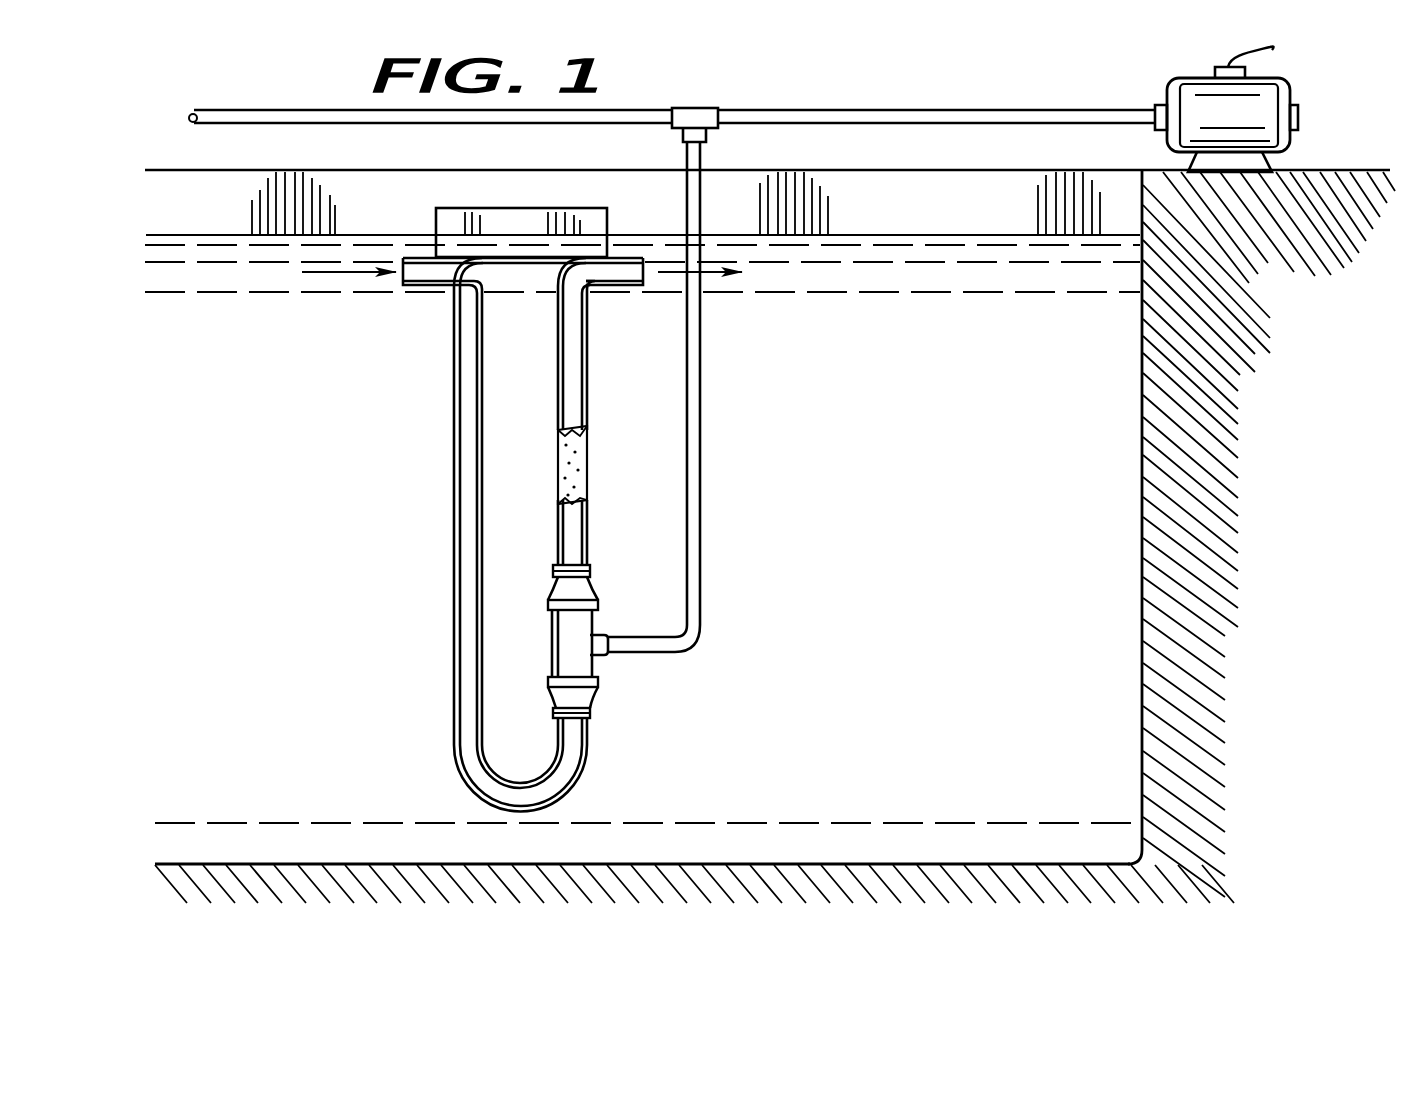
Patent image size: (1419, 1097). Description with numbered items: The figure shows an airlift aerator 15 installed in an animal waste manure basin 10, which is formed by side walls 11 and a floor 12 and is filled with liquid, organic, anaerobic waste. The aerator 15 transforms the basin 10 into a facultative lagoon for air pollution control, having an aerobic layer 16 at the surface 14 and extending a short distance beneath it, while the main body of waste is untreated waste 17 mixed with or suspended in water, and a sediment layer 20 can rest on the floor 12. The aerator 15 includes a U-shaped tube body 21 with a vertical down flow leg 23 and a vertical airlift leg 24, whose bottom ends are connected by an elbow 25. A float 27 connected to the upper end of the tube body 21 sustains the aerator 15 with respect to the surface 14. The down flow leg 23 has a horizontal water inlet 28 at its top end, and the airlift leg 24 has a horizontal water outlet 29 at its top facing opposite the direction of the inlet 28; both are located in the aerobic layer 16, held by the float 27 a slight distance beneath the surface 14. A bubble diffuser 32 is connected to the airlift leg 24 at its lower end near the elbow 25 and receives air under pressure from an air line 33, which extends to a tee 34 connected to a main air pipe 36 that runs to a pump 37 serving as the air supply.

The animal waste manure basin 10 is at (1106, 562).
The side walls 11 is at (1140, 451).
The floor 12 is at (261, 862).
The surface 14 is at (187, 240).
The airlift aerator 15 is at (443, 583).
The aerobic layer 16 is at (941, 272).
The untreated waste 17 is at (222, 607).
The sediment layer 20 is at (845, 836).
The U-shaped tube body 21 is at (452, 714).
The down flow leg 23 is at (455, 460).
The airlift leg 24 is at (568, 397).
The elbow 25 is at (515, 810).
The float 27 is at (510, 215).
The water inlet 28 is at (430, 290).
The water outlet 29 is at (600, 268).
The bubble diffuser 32 is at (590, 667).
The air line 33 is at (705, 568).
The tee 34 is at (705, 110).
The main air pipe 36 is at (1055, 110).
The pump 37 is at (1290, 98).